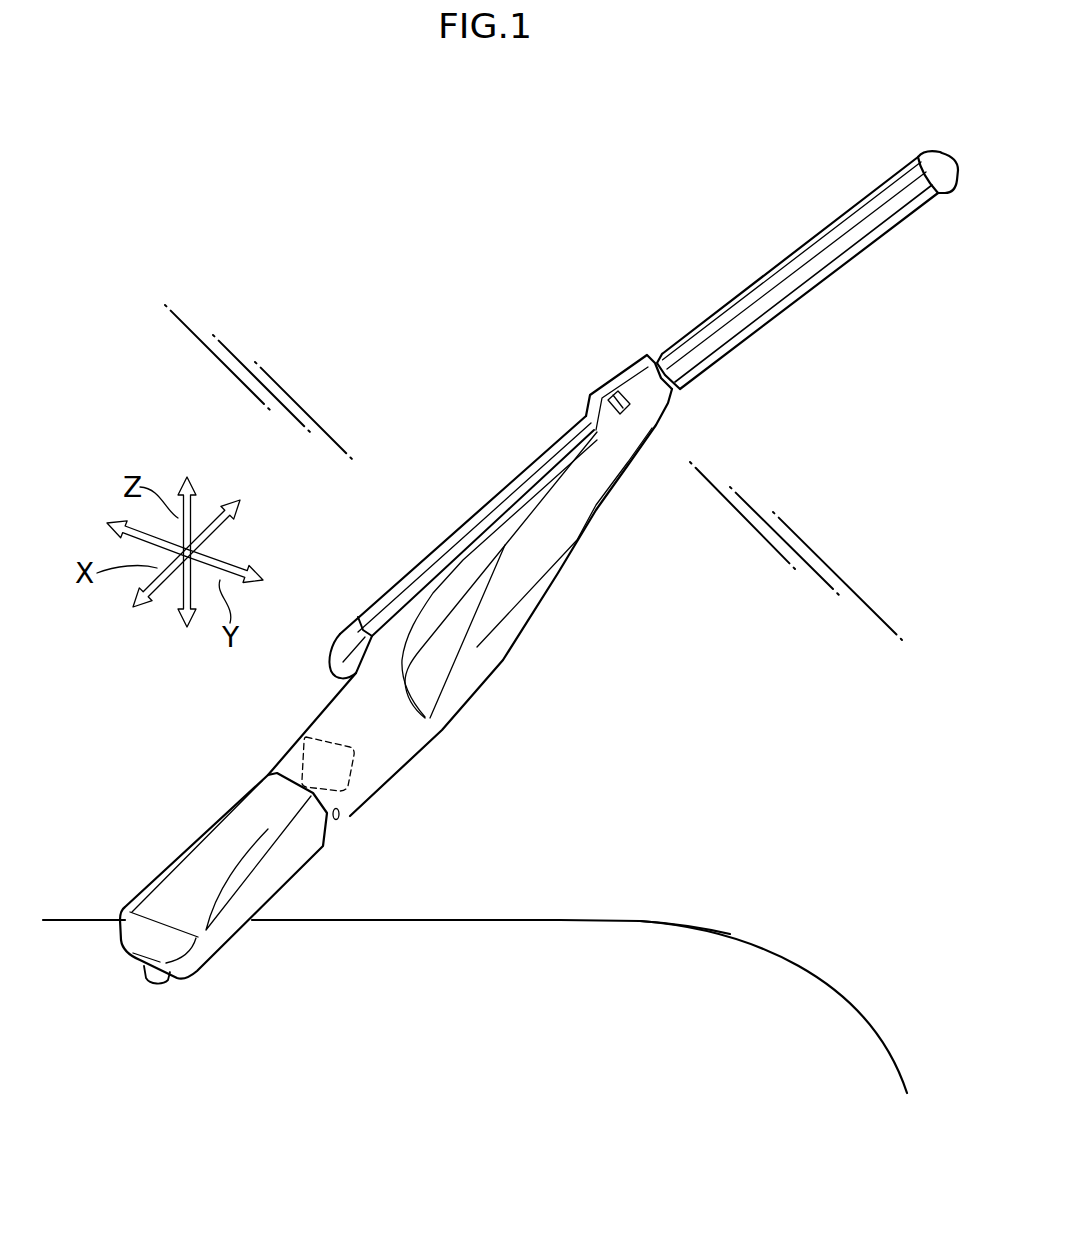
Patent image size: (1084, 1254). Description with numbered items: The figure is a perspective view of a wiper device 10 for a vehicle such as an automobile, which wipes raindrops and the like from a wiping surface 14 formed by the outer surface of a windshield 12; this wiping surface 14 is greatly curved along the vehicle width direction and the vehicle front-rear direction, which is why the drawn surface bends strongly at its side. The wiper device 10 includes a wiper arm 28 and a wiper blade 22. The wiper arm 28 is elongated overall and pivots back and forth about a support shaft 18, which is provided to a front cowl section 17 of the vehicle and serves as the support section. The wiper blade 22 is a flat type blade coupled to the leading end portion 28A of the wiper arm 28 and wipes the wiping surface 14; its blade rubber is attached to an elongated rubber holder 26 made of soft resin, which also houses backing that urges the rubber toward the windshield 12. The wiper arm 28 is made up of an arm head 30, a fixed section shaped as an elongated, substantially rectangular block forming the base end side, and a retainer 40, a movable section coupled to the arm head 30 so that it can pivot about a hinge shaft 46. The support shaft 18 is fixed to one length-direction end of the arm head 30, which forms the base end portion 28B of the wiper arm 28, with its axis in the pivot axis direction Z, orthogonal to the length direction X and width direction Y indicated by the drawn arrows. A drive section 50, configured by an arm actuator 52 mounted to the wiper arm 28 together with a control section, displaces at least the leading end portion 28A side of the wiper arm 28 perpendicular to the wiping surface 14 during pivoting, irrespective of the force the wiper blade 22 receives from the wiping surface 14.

The wiper device 10 is at (544, 317).
The windshield 12 is at (552, 872).
The wiping surface 14 is at (730, 184).
The front cowl section 17 is at (670, 950).
The support shaft 18 is at (147, 965).
The wiper blade 22 is at (807, 284).
The rubber holder 26 is at (847, 250).
The wiper arm 28 is at (375, 654).
The leading end portion 28A is at (628, 367).
The base end portion 28B is at (160, 897).
The arm head 30 is at (202, 860).
The retainer 40 is at (553, 567).
The hinge shaft 46 is at (342, 814).
The drive section 50 is at (283, 726).
The arm actuator 52 is at (312, 748).